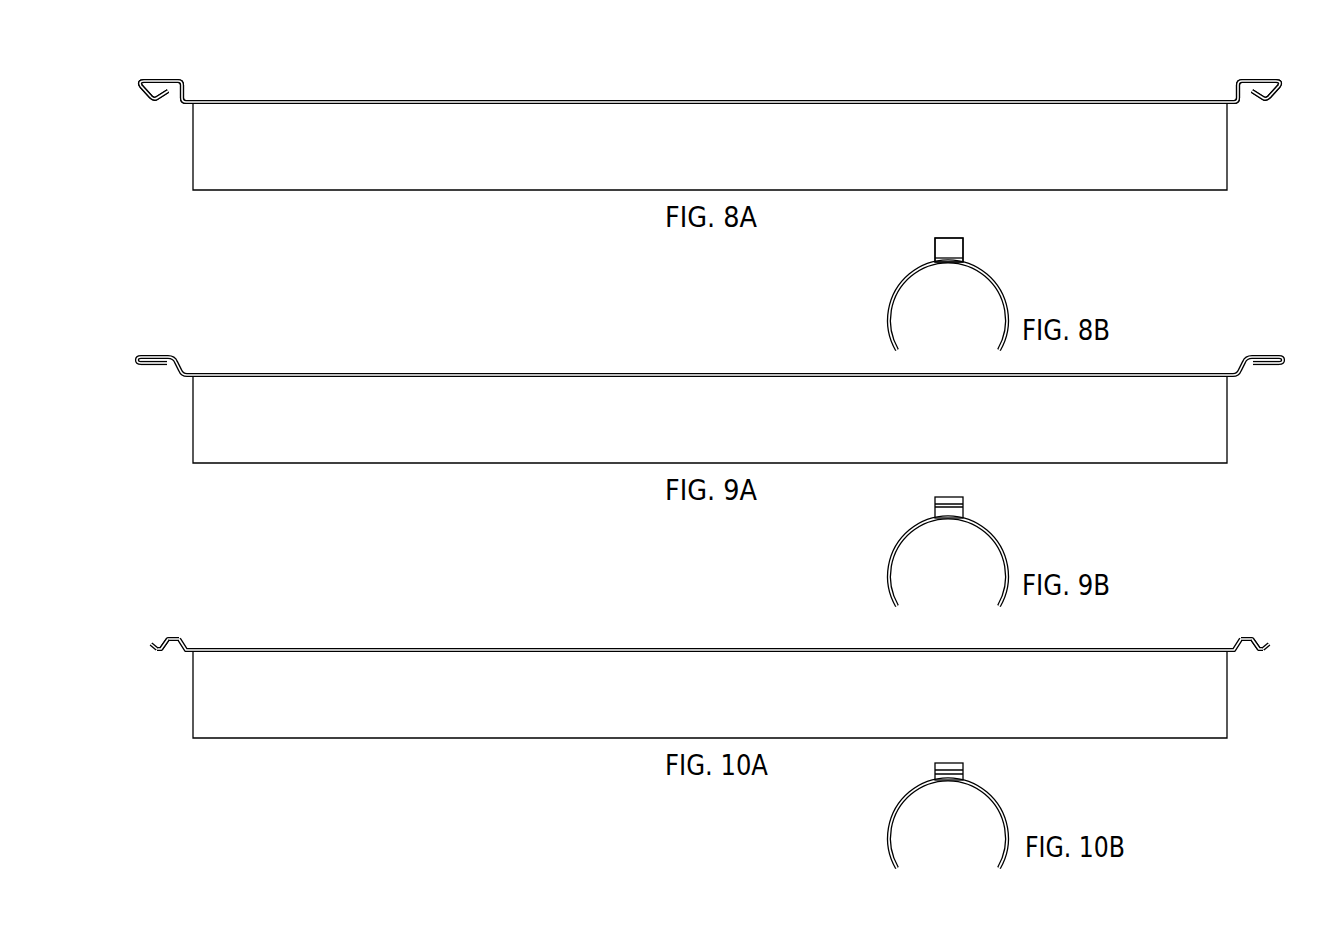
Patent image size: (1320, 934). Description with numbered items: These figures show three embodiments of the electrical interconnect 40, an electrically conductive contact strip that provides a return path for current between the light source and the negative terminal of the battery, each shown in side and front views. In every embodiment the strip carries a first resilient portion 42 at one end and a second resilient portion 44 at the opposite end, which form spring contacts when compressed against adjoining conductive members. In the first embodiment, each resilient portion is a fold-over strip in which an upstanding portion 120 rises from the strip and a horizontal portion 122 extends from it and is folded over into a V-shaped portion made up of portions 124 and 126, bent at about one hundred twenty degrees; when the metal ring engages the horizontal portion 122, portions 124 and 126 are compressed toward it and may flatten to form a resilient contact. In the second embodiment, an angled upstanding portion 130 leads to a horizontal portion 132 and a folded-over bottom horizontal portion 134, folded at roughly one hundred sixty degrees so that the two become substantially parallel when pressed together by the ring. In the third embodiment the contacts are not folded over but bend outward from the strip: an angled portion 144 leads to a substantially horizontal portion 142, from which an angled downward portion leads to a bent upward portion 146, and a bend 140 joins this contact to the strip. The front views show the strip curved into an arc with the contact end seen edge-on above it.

In FIG. 8A, the electrical interconnect 40 is at (432, 102).
In FIG. 8B, the electrical interconnect 40 is at (895, 297).
In FIG. 9A, the electrical interconnect 40 is at (432, 375).
In FIG. 9B, the electrical interconnect 40 is at (895, 557).
In FIG. 10A, the electrical interconnect 40 is at (432, 650).
In FIG. 10B, the electrical interconnect 40 is at (895, 819).
In FIG. 8A, the first resilient portion 42 is at (189, 59).
In FIG. 8A, the second resilient portion 44 is at (1231, 59).
In FIG. 8B, the second resilient portion 44 is at (900, 246).
In FIG. 8A, the upstanding portion 120 is at (184, 92).
In FIG. 8A, the horizontal portion 122 is at (152, 78).
In FIG. 8B, the horizontal portion 122 is at (952, 238).
In FIG. 8A, the V-shaped portion leg 124 is at (143, 93).
In FIG. 8B, the V-shaped portion leg 124 is at (953, 256).
In FIG. 8A, the V-shaped portion leg 126 is at (167, 97).
In FIG. 9A, the angled upstanding portion 130 is at (178, 363).
In FIG. 9A, the horizontal portion 132 is at (153, 354).
In FIG. 9B, the horizontal portion 132 is at (952, 497).
In FIG. 9A, the folded over bottom horizontal portion 134 is at (145, 364).
In FIG. 9B, the folded over bottom horizontal portion 134 is at (952, 512).
In FIG. 10A, the bend 140 is at (185, 646).
In FIG. 10A, the substantially horizontal portion 142 is at (174, 637).
In FIG. 10B, the substantially horizontal portion 142 is at (950, 764).
In FIG. 10A, the angled upstanding portion 144 is at (166, 640).
In FIG. 10A, the bent upward portion 146 is at (150, 648).
In FIG. 10B, the bent upward portion 146 is at (953, 789).